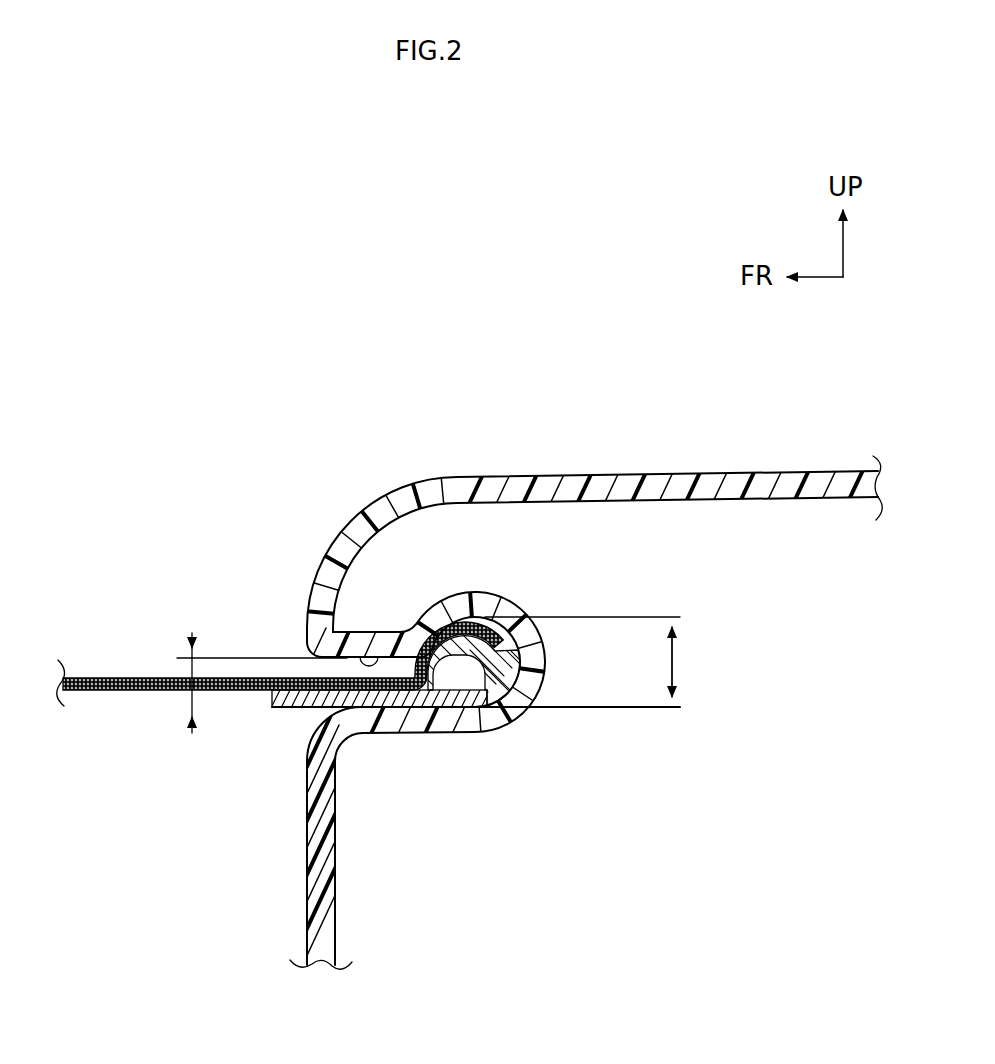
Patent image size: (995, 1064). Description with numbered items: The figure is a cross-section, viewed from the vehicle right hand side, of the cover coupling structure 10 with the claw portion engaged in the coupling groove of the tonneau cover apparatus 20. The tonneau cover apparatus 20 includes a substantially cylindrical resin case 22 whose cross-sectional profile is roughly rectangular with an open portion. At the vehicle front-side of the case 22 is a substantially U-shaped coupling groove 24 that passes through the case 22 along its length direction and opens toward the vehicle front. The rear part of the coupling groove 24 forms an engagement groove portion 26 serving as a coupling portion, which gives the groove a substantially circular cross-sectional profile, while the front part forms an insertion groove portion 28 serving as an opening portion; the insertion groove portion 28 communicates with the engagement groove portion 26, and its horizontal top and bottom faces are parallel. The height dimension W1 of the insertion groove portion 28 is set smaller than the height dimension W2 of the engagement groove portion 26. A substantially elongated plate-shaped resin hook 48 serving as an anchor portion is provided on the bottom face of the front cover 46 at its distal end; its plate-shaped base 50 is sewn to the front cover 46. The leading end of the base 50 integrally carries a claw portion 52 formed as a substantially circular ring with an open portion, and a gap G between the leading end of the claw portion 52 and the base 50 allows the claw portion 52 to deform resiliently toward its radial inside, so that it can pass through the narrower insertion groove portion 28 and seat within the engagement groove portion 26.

The cover coupling structure 10 is at (348, 290).
The tonneau cover apparatus 20 is at (624, 420).
The case 22 is at (760, 472).
The coupling groove 24 is at (332, 666).
The engagement groove portion 26 is at (499, 623).
The insertion groove portion 28 is at (378, 653).
The front cover 46 is at (90, 693).
The hook 48 is at (281, 716).
The base 50 is at (302, 710).
The claw portion 52 is at (510, 657).
The gap G is at (448, 685).
The height direction dimension of the insertion groove portion W1 is at (190, 668).
The height direction dimension of the engagement groove portion W2 is at (682, 663).